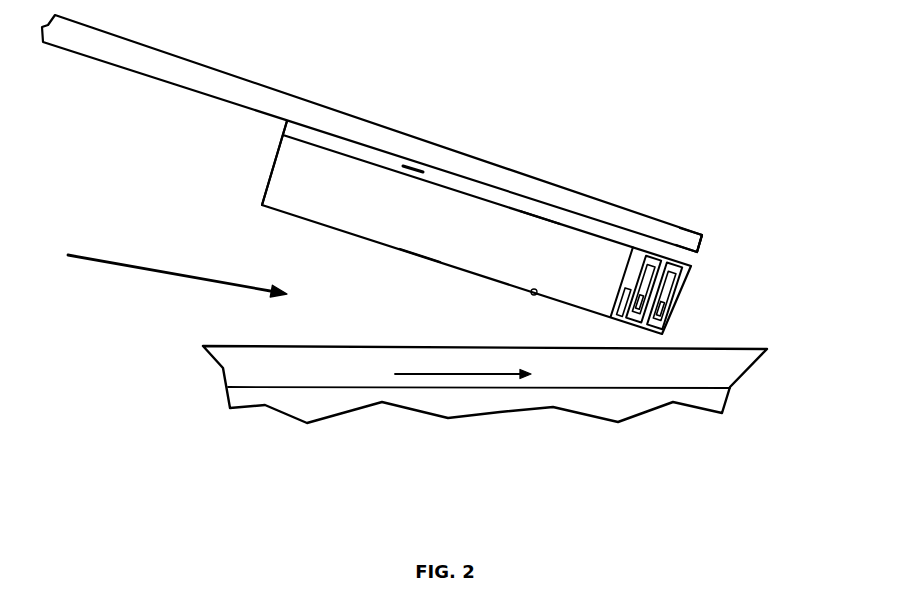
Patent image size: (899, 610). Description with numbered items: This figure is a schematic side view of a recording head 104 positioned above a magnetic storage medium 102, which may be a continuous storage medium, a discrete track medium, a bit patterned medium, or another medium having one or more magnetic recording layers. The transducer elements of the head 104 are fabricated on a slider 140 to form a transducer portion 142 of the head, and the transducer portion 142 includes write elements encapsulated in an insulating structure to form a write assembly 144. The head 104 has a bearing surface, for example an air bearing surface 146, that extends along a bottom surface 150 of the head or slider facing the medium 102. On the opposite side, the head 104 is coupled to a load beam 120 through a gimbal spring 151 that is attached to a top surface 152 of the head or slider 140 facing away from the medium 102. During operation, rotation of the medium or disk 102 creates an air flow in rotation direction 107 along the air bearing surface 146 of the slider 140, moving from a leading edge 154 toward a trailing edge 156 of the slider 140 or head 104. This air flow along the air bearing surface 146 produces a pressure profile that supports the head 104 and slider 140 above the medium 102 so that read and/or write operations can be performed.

The medium 102 is at (498, 362).
The head 104 is at (693, 225).
The rotation direction 107 is at (462, 373).
The load beam 120 is at (307, 112).
The slider 140 is at (455, 207).
The transducer portion 142 is at (702, 267).
The write assembly 144 is at (666, 243).
The air bearing surface 146 is at (415, 262).
The bottom surface 150 is at (538, 288).
The gimbal spring 151 is at (415, 168).
The top surface 152 is at (540, 215).
The leading edge 154 is at (268, 183).
The trailing edge 156 is at (683, 295).